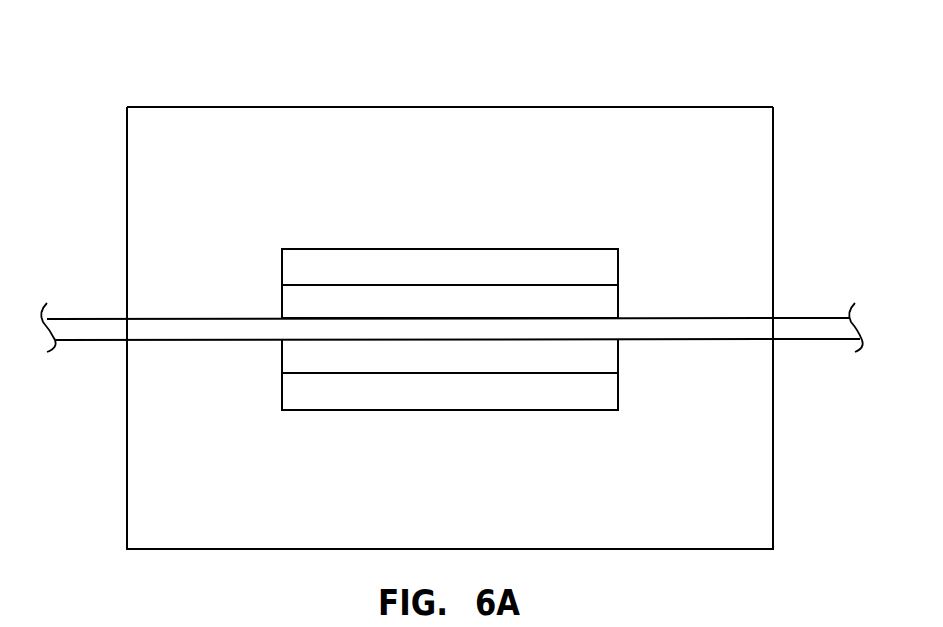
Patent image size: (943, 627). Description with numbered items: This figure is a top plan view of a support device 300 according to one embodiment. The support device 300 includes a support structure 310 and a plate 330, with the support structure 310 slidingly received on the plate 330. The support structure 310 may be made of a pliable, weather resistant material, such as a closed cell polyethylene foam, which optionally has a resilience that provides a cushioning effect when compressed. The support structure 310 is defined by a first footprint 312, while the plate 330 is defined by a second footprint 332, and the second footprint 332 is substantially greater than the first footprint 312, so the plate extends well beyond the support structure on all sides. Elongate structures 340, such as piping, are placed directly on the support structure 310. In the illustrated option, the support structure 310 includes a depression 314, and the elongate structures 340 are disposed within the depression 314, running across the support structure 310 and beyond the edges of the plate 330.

The support device 300 is at (250, 87).
The support structure 310 is at (619, 386).
The first footprint 312 is at (450, 247).
The depression 314 is at (595, 285).
The plate 330 is at (750, 471).
The second footprint 332 is at (638, 105).
The elongate structures 340 is at (817, 341).